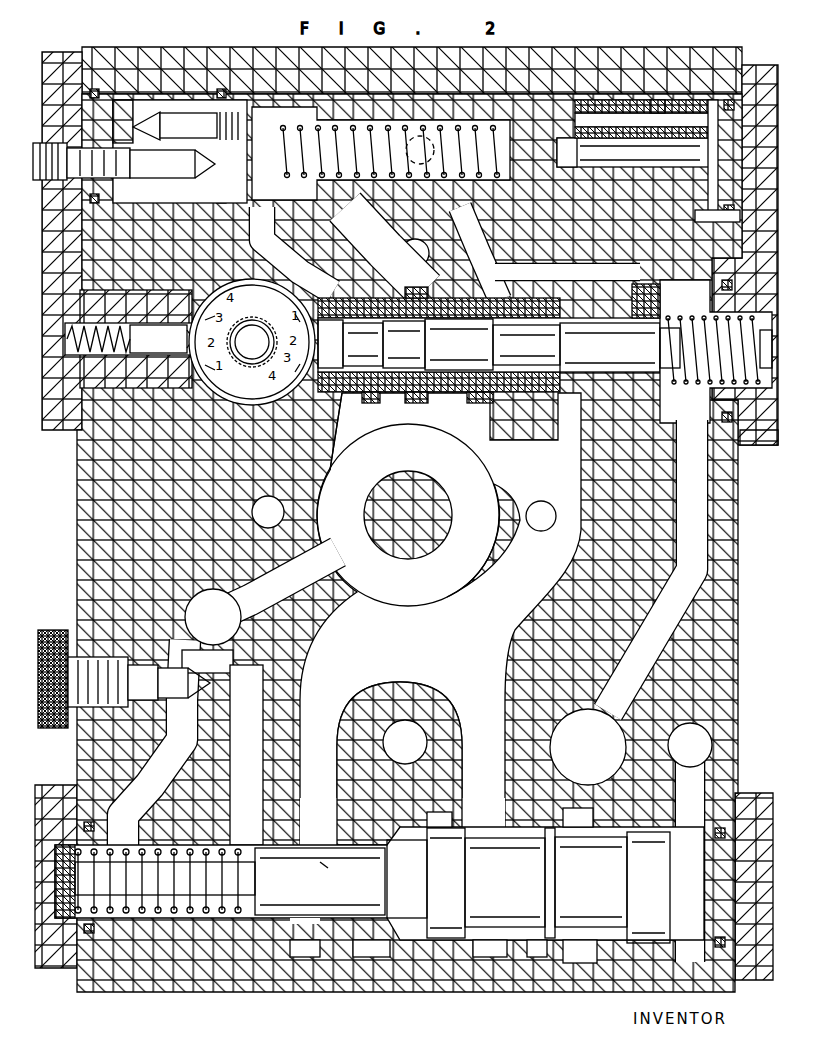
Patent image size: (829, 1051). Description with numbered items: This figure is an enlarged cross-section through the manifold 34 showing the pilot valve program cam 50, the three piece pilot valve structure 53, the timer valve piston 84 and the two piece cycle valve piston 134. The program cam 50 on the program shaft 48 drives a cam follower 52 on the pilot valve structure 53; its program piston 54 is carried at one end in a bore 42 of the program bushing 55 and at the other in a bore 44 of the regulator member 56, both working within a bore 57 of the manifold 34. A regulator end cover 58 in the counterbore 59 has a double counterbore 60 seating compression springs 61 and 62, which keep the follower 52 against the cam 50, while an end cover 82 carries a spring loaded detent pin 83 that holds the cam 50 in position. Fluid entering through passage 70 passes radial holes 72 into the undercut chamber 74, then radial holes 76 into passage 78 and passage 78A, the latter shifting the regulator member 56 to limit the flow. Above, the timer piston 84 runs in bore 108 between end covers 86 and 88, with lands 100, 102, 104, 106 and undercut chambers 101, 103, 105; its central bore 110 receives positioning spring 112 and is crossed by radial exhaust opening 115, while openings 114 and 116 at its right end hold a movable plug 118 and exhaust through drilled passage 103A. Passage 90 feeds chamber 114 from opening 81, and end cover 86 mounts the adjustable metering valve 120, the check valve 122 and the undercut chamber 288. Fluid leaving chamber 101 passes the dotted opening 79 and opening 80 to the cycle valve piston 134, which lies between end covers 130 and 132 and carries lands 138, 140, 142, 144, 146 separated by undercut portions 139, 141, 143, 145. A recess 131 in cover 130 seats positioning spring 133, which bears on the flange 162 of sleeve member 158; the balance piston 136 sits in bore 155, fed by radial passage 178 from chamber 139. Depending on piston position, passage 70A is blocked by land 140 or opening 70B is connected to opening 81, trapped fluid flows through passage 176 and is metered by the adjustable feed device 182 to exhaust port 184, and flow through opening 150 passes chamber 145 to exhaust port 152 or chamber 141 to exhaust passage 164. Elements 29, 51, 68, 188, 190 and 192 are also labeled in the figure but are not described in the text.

The shaft 29 is at (418, 521).
The manifold 34 is at (564, 39).
The bore 42 is at (378, 320).
The bore 44 is at (672, 350).
The program shaft 48 is at (240, 368).
The pilot valve program cam 50 is at (278, 305).
The rotary valve hub 51 is at (261, 350).
The cam follower 52 is at (278, 368).
The three piece pilot valve structure 53 is at (477, 325).
The program piston 54 is at (680, 350).
The program bushing 55 is at (335, 455).
The regulator member 56 is at (650, 407).
The bore 57 is at (660, 298).
The regulator end cover member 58 is at (758, 444).
The manifold counterbore 59 is at (730, 300).
The double counterbore 60 is at (772, 352).
The compression spring 61 is at (745, 322).
The compression spring 62 is at (713, 350).
The passage 68 is at (414, 750).
The passage 70 is at (418, 663).
The passage 70A is at (316, 809).
The opening 70B is at (494, 809).
The radial holes 72 is at (570, 415).
The undercut chamber 74 is at (552, 355).
The radial holes 76 is at (528, 318).
The passage 78 is at (515, 255).
The passage 78A is at (632, 270).
The dotted opening 79 is at (440, 148).
The opening 80 is at (700, 753).
The opening 81 is at (660, 100).
The end cover 82 is at (55, 430).
The spring loaded detent pin 83 is at (168, 348).
The timer valve piston 84 is at (306, 191).
The end cover 86 is at (60, 62).
The end cover 88 is at (760, 80).
The passage 90 is at (590, 245).
The land 100 is at (365, 105).
The undercut chamber 101 is at (440, 105).
The land 102 is at (530, 100).
The undercut chamber 103 is at (528, 275).
The drilled passage 103A is at (568, 100).
The land 104 is at (590, 100).
The undercut chamber 105 is at (635, 110).
The land 106 is at (688, 100).
The bore 108 is at (300, 100).
The bore 110 is at (390, 151).
The compression positioning spring 112 is at (299, 147).
The opening 114 is at (568, 152).
The radial exhaust opening 115 is at (406, 152).
The opening 116 is at (713, 98).
The movable plug member 118 is at (680, 162).
The adjustable spring loaded metering valve 120 is at (165, 172).
The spring loaded check valve 122 is at (214, 135).
The end cover 130 is at (60, 790).
The recess 131 is at (55, 862).
The end cover 132 is at (748, 795).
The compression positioning spring 133 is at (48, 968).
The cycle valve piston 134 is at (588, 835).
The balance piston 136 is at (320, 889).
The land 138 is at (185, 918).
The undercut chamber 139 is at (263, 960).
The land 140 is at (340, 960).
The undercut chamber 141 is at (407, 879).
The land 142 is at (446, 883).
The undercut chamber 143 is at (520, 885).
The land 144 is at (530, 960).
The undercut chamber 145 is at (603, 885).
The land 146 is at (648, 887).
The exhaust opening 150 is at (195, 100).
The exhaust port 152 is at (742, 215).
The bore 155 is at (337, 865).
The sleeve member 158 is at (210, 925).
The flange 162 is at (240, 920).
The passage 164 is at (388, 960).
The passage 176 is at (258, 753).
The radial passage 178 is at (244, 800).
The adjustable metering feed device 182 is at (58, 628).
The exhaust port 184 is at (228, 625).
The spool land 188 is at (404, 344).
The port 190 is at (415, 403).
The passage 192 is at (328, 265).
The undercut chamber 288 is at (160, 60).